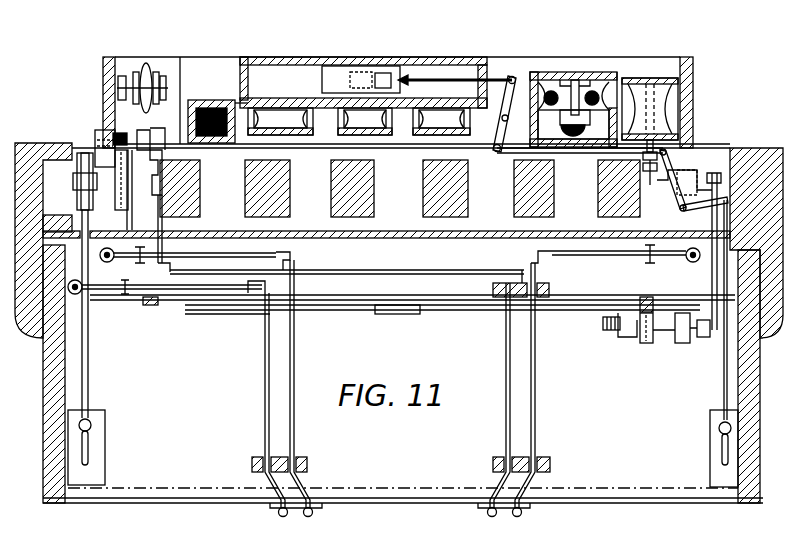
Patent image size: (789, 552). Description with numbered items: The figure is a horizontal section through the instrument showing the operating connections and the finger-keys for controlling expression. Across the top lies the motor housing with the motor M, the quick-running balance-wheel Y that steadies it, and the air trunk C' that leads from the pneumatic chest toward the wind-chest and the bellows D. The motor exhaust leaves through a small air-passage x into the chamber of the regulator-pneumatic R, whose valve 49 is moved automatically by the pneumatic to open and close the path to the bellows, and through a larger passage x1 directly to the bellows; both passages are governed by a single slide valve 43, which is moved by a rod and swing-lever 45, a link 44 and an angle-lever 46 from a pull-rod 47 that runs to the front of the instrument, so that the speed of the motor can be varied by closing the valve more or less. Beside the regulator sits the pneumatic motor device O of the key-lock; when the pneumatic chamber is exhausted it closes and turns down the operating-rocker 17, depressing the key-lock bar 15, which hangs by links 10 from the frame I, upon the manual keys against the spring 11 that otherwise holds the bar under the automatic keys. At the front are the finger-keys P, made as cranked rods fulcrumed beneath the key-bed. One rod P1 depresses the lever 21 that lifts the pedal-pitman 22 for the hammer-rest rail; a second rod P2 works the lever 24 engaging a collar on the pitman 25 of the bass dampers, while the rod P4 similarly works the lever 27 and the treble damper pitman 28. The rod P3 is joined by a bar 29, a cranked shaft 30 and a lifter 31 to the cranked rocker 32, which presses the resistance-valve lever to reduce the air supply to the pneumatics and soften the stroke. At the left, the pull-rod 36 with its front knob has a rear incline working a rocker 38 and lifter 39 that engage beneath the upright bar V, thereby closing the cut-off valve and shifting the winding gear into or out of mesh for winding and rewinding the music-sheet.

The bellows D is at (103, 81).
The balance-wheel Y is at (146, 63).
The air trunk C' is at (218, 111).
The larger air-passage x1 is at (352, 58).
The slide valve 43 is at (375, 70).
The air-passage x is at (409, 76).
The swing-lever 45 is at (511, 76).
The link 44 is at (568, 154).
The regulator-pneumatic R is at (556, 80).
The regulator valve 49 is at (581, 110).
The pneumatic motor device O is at (645, 84).
The angle-lever 46 is at (683, 172).
The motor M is at (359, 127).
The rocker 38 is at (93, 158).
The upright bar V is at (103, 140).
The cranked rocker 32 is at (151, 140).
The lifter 31 is at (160, 165).
The cranked shaft 30 is at (172, 233).
The lifter 39 is at (133, 190).
The pitman 25 is at (185, 265).
The lever 24 is at (290, 256).
The bar 29 is at (347, 269).
The lever 27 is at (589, 271).
The pitman 28 is at (685, 266).
The pedal-pitman 22 is at (90, 295).
The lever 21 is at (137, 303).
The key-lock bar 15 is at (340, 312).
The links 10 is at (220, 312).
The frame I is at (422, 312).
The operating-rocker 17 is at (620, 338).
The spring 11 is at (655, 325).
The pull-rod 47 is at (723, 396).
The pull-rod 36 is at (89, 396).
The finger-key rod P1 is at (267, 405).
The finger-key rod P2 is at (303, 388).
The finger-key rod P3 is at (495, 400).
The finger-key rod P4 is at (536, 390).
The finger-keys P is at (400, 522).